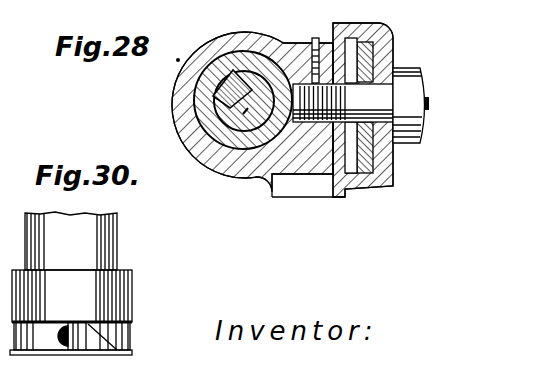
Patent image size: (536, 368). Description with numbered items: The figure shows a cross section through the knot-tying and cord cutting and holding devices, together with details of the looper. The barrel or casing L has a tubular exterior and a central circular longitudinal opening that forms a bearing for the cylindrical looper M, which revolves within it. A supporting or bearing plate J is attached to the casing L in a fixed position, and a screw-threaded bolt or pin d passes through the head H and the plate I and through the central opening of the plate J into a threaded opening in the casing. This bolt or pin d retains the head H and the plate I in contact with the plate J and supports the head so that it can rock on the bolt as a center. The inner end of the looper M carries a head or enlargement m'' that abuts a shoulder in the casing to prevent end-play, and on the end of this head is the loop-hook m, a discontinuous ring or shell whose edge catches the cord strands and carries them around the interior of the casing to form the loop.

In FIG. 28, the barrel or casing L is at (258, 103).
In FIG. 28, the looper M is at (301, 50).
In FIG. 30, the looper M is at (71, 241).
In FIG. 28, the supporting or bearing plate J is at (346, 37).
In FIG. 28, the plate I is at (390, 34).
In FIG. 28, the head H is at (409, 92).
In FIG. 28, the bolt or pin d is at (420, 103).
In FIG. 30, the head or enlargement m'' is at (72, 296).
In FIG. 30, the loop-hook m is at (71, 338).